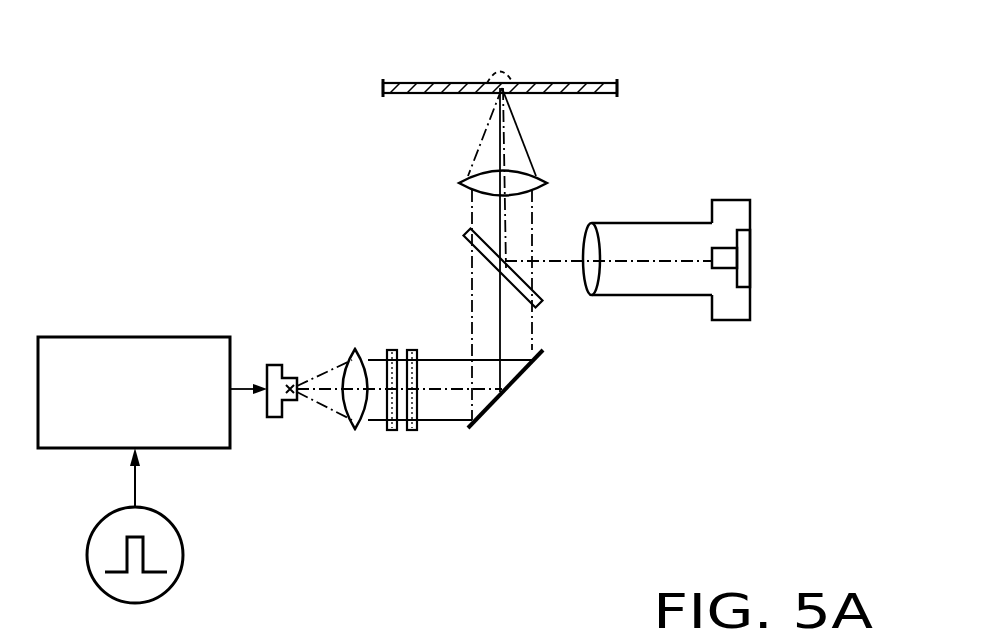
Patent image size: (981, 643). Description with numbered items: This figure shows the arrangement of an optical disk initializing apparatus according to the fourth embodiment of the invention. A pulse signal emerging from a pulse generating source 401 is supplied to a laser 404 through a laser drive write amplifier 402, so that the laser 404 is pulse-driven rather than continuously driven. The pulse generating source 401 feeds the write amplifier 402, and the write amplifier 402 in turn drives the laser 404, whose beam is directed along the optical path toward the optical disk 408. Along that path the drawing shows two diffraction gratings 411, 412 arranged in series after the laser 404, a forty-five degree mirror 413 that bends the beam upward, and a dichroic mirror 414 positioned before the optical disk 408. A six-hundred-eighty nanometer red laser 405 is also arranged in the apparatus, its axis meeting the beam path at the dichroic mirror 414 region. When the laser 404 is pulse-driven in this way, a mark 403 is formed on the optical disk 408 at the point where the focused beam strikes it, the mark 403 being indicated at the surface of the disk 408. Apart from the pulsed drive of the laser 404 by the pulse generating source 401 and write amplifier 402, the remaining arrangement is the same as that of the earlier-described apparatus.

The pulse generating source 401 is at (184, 555).
The laser drive write amplifier 402 is at (170, 337).
The mark 403 is at (509, 72).
The laser 404 is at (278, 365).
The 680-nm red laser 405 is at (720, 250).
The optical disk 408 is at (444, 83).
The diffraction grating 411 is at (392, 431).
The diffraction grating 412 is at (412, 431).
The 45° mirror 413 is at (463, 233).
The dichroic mirror 414 is at (460, 183).